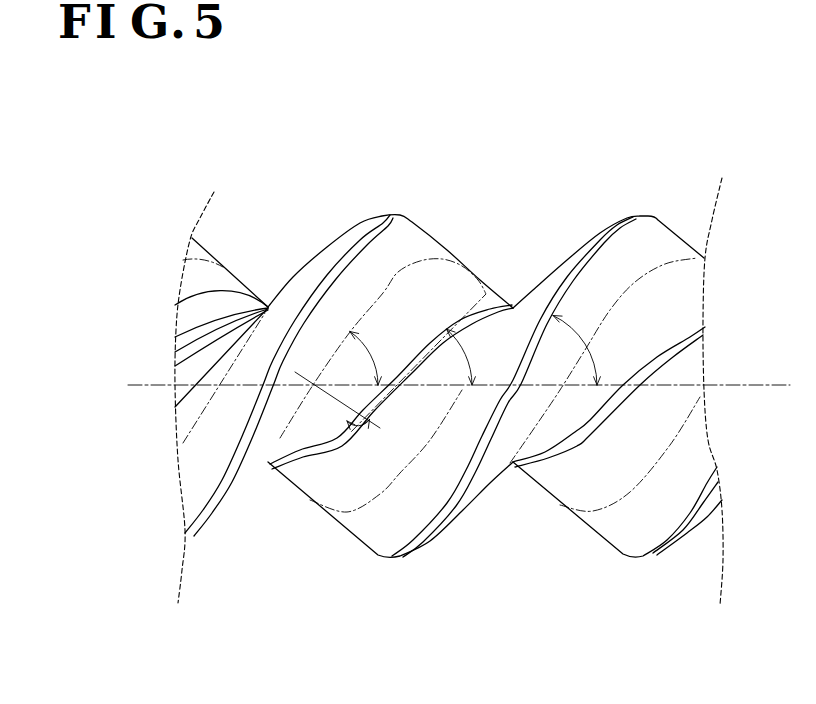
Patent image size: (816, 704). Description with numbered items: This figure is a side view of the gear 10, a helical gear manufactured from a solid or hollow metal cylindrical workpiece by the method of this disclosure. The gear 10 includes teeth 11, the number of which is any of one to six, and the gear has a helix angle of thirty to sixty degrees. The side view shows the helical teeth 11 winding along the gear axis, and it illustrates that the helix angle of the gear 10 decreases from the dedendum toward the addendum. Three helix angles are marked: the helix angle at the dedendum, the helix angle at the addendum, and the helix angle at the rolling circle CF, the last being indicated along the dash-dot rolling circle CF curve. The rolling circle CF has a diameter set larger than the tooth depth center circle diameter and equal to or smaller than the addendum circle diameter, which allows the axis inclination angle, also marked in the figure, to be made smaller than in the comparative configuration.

The gear 10 is at (677, 107).
The teeth 11 is at (394, 237).
The rolling circle CF is at (383, 293).